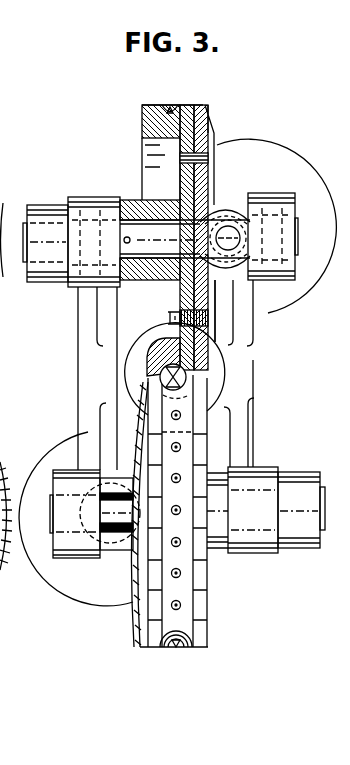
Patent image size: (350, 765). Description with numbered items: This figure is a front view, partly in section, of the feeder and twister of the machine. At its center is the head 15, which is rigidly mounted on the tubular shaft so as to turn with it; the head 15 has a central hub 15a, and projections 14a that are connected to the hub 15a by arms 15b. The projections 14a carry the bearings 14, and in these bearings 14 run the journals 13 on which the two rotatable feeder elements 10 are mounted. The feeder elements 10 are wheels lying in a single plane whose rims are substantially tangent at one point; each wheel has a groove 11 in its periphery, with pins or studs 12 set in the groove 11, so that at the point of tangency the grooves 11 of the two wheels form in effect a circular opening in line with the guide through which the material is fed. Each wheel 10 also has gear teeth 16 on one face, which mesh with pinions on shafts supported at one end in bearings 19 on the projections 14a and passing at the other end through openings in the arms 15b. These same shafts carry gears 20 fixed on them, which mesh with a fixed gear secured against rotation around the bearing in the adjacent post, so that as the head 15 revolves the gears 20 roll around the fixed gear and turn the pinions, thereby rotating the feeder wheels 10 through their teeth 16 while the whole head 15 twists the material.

The feeder elements 10 is at (142, 123).
The grooves 11 is at (175, 107).
The pins or studs 12 is at (181, 575).
The journal 13 is at (23, 266).
The bearings 14 is at (84, 198).
The projections 14a is at (85, 325).
The head 15 is at (128, 363).
The central hub 15a is at (232, 378).
The arms 15b is at (85, 418).
The gear teeth 16 is at (212, 118).
The bearings 19 is at (219, 203).
The gears 20 is at (276, 182).